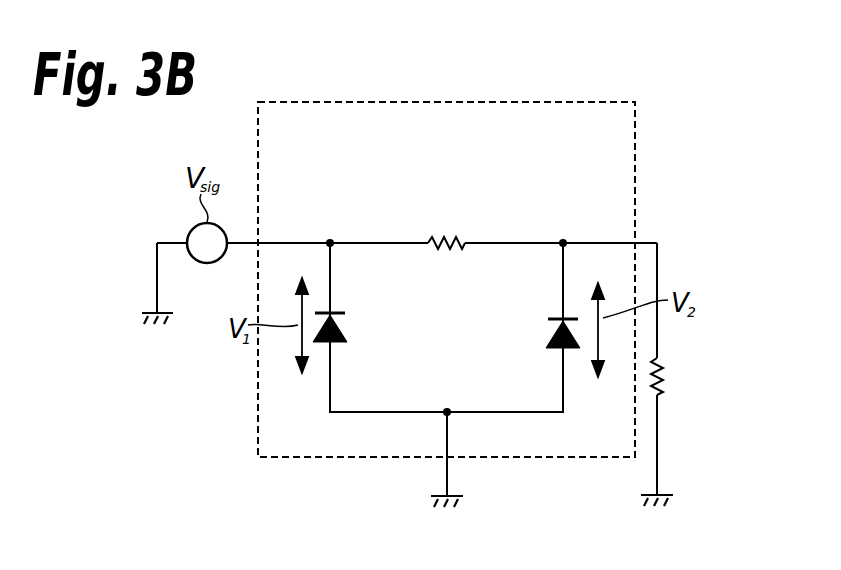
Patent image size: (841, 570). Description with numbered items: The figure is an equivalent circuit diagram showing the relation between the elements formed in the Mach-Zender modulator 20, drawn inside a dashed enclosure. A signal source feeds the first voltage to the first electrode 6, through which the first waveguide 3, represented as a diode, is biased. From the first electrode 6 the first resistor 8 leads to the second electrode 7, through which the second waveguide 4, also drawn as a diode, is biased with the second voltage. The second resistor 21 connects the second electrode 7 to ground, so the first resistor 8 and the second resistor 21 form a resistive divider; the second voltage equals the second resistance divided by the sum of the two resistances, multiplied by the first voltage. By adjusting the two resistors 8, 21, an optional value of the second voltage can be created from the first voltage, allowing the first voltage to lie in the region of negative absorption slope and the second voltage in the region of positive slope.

The Mach-Zender modulator 20 is at (572, 101).
The first waveguide 3 is at (348, 330).
The second waveguide 4 is at (540, 322).
The first electrode 6 is at (318, 240).
The second electrode 7 is at (566, 236).
The first resistor 8 is at (442, 236).
The second resistor 21 is at (672, 380).